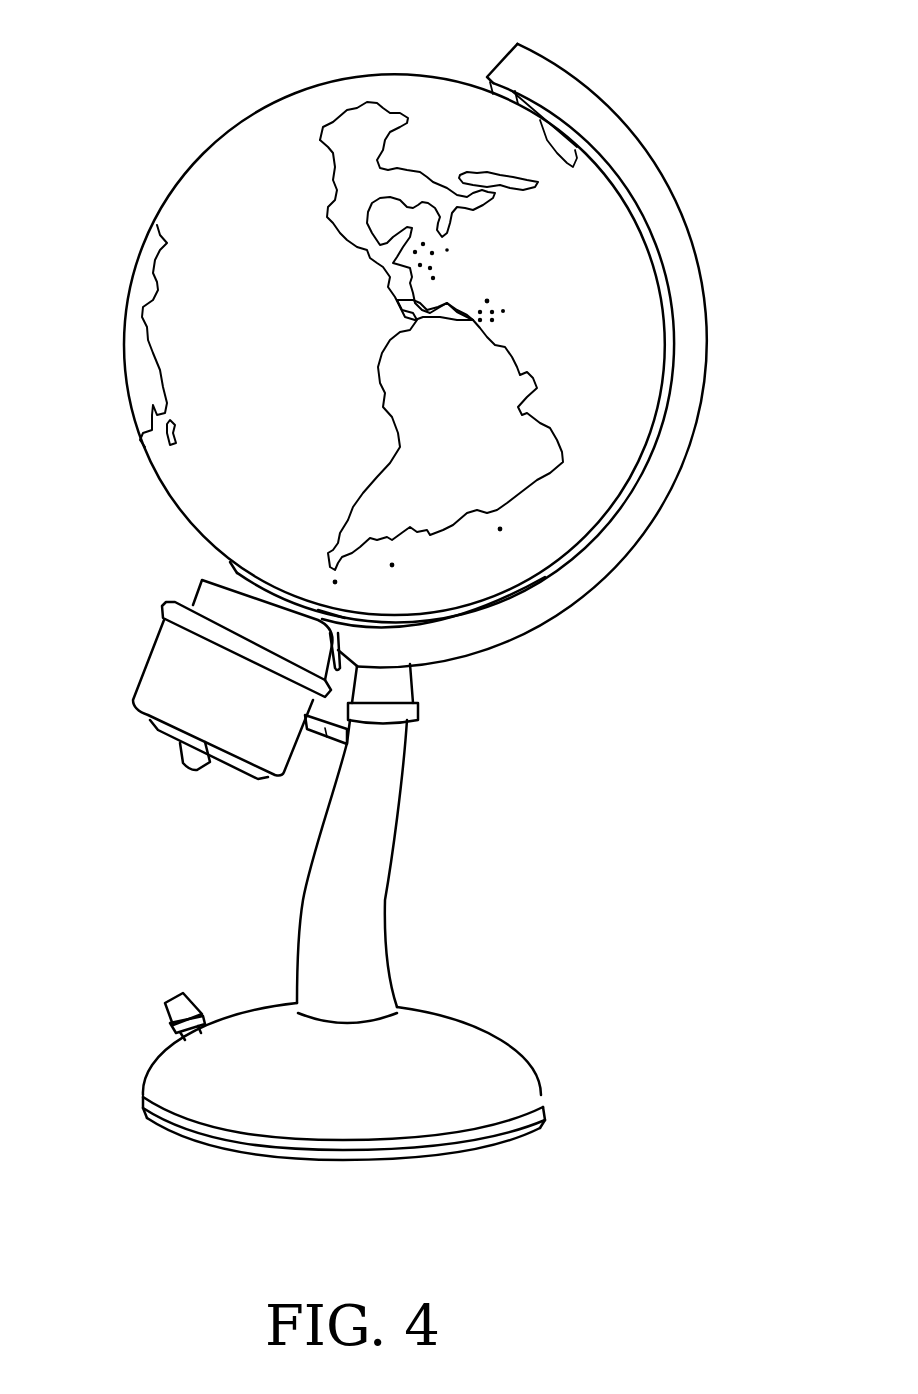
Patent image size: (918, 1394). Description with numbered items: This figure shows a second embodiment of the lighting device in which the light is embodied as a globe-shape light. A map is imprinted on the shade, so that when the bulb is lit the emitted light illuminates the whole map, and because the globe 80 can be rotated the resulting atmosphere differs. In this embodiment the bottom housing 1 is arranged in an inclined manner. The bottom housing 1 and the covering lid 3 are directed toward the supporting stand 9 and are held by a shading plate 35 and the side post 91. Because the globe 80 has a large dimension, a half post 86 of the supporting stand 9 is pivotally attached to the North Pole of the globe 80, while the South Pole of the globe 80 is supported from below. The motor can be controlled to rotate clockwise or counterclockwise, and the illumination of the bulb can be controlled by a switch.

The globe 80 is at (291, 124).
The half post 86 is at (702, 352).
The covering lid 3 is at (223, 608).
The bottom housing 1 is at (157, 682).
The shading plate 35 is at (340, 650).
The side post 91 is at (325, 732).
The supporting stand 9 is at (357, 878).